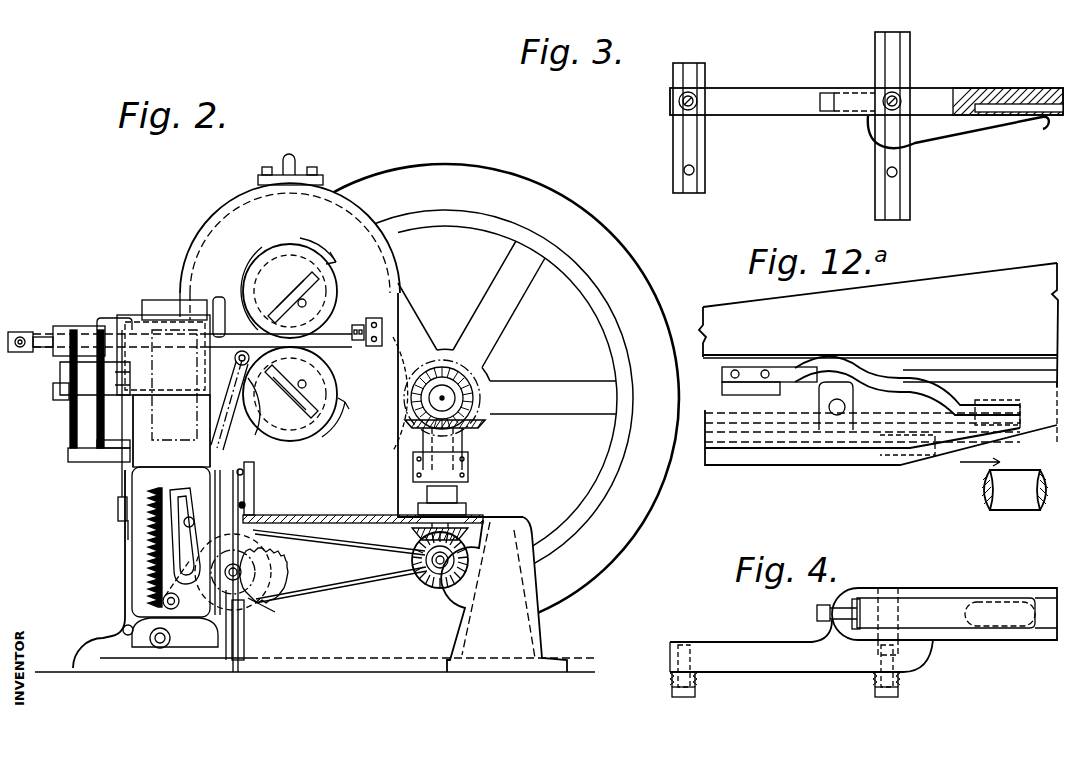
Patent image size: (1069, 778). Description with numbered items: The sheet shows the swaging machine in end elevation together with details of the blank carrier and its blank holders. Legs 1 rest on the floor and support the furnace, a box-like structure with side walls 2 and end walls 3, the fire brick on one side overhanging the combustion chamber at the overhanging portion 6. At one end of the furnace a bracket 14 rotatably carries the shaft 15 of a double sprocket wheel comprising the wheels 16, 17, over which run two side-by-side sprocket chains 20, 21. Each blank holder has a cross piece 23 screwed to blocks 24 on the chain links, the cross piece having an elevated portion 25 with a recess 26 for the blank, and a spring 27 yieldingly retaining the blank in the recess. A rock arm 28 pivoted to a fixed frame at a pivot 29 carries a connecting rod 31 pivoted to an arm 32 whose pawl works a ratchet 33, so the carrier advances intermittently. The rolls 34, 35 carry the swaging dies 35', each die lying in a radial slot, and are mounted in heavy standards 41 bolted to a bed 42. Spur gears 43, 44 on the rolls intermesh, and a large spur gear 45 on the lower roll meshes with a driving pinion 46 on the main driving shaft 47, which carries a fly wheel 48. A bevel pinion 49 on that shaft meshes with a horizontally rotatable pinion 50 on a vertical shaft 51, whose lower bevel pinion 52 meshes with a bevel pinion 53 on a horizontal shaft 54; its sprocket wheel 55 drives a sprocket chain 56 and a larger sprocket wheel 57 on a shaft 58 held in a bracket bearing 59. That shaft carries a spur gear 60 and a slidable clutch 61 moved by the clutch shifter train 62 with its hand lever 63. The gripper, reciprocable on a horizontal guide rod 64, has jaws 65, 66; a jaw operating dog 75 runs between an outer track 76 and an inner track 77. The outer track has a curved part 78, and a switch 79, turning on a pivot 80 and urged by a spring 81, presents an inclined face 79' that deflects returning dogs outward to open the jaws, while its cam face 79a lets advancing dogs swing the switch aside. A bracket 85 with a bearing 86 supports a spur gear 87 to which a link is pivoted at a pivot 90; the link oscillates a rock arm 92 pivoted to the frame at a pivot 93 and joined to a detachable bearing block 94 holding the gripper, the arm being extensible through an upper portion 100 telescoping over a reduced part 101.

In FIG. 2, the legs 1 is at (108, 648).
In FIG. 2, the side walls 2 is at (215, 374).
In FIG. 2, the end walls 3 is at (174, 385).
In FIG. 2, the overhanging fire brick 6 is at (150, 300).
In FIG. 2, the bracket 14 is at (62, 376).
In FIG. 2, the shaft 15 is at (62, 400).
In FIG. 2, the sprocket wheel 16 is at (70, 435).
In FIG. 2, the sprocket wheel 17 is at (100, 450).
In FIG. 2, the sprocket chain 20 is at (72, 446).
In FIG. 3, the sprocket chain 20 is at (676, 64).
In FIG. 4, the sprocket chain 20 is at (696, 698).
In FIG. 2, the sprocket chain 21 is at (84, 452).
In FIG. 3, the cross piece 23 is at (866, 101).
In FIG. 4, the cross piece 23 is at (801, 646).
In FIG. 3, the blocks 24 is at (680, 90).
In FIG. 4, the blocks 24 is at (672, 684).
In FIG. 3, the elevated portion 25 is at (941, 98).
In FIG. 4, the elevated portion 25 is at (950, 594).
In FIG. 3, the recess 26 is at (1013, 110).
In FIG. 4, the recess 26 is at (1044, 605).
In FIG. 3, the spring 27 is at (962, 131).
In FIG. 4, the spring 27 is at (957, 620).
In FIG. 2, the rock arm 28 is at (178, 618).
In FIG. 2, the pivot 29 is at (244, 636).
In FIG. 2, the connecting rod 31 is at (120, 484).
In FIG. 2, the arm 32 is at (120, 360).
In FIG. 2, the ratchet 33 is at (130, 380).
In FIG. 2, the roll 34 is at (288, 250).
In FIG. 2, the roll 35 is at (192, 398).
In FIG. 2, the die 35' is at (361, 346).
In FIG. 2, the uprights or standards 41 is at (222, 222).
In FIG. 2, the bed 42 is at (356, 637).
In FIG. 2, the spur gear 43 is at (256, 268).
In FIG. 2, the spur gear 44 is at (264, 436).
In FIG. 2, the large spur gear 45 is at (388, 394).
In FIG. 2, the driving pinion 46 is at (432, 366).
In FIG. 2, the main driving shaft 47 is at (448, 394).
In FIG. 2, the fly wheel 48 is at (452, 176).
In FIG. 2, the bevel pinion 49 is at (456, 398).
In FIG. 2, the horizontally rotatable pinion 50 is at (480, 426).
In FIG. 2, the vertical shaft 51 is at (446, 490).
In FIG. 2, the bevel pinion 52 is at (465, 535).
In FIG. 2, the bevel pinion 53 is at (442, 588).
In FIG. 2, the horizontal shaft 54 is at (460, 575).
In FIG. 2, the sprocket wheel 55 is at (422, 566).
In FIG. 2, the sprocket chain 56 is at (340, 542).
In FIG. 2, the sprocket wheel 57 is at (270, 574).
In FIG. 2, the shaft 58 is at (240, 570).
In FIG. 2, the bracket bearing 59 is at (246, 505).
In FIG. 2, the spur gear 60 is at (262, 614).
In FIG. 2, the clutch 61 is at (262, 585).
In FIG. 2, the clutch shifter train 62 is at (240, 665).
In FIG. 2, the hand lever 63 is at (243, 480).
In FIG. 12A, the guide rod 64 is at (1010, 503).
In FIG. 2, the gripper jaw 65 is at (248, 345).
In FIG. 2, the gripper jaw 66 is at (256, 379).
In FIG. 12A, the jaw operating dog 75 is at (985, 395).
In FIG. 12A, the outer track 76 is at (756, 466).
In FIG. 12A, the inner track 77 is at (1035, 420).
In FIG. 12A, the curved part 78 is at (945, 458).
In FIG. 12A, the switch 79 is at (862, 413).
In FIG. 12A, the inclined cam face 79a is at (900, 458).
In FIG. 12A, the inclined face 79' is at (1012, 431).
In FIG. 12A, the pivot 80 is at (829, 406).
In FIG. 12A, the spring 81 is at (870, 370).
In FIG. 2, the bracket 85 is at (255, 492).
In FIG. 2, the bearing 86 is at (128, 517).
In FIG. 2, the spur gear 87 is at (124, 532).
In FIG. 2, the pivot 90 is at (177, 534).
In FIG. 2, the rock arm 92 is at (162, 598).
In FIG. 2, the pivot 93 is at (160, 648).
In FIG. 2, the bearing block 94 is at (217, 315).
In FIG. 2, the upper portion 100 is at (296, 394).
In FIG. 2, the reduced part 101 is at (222, 430).